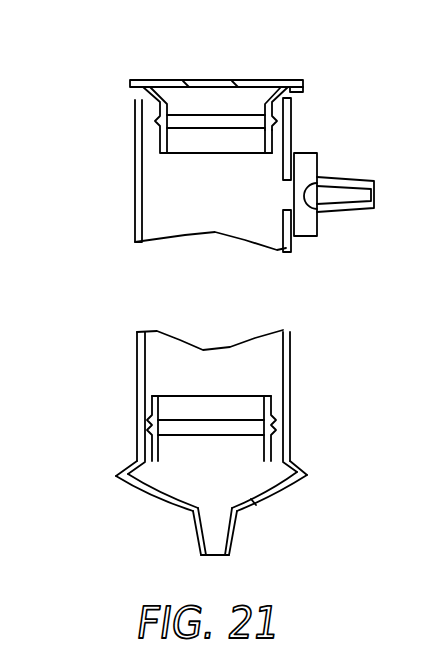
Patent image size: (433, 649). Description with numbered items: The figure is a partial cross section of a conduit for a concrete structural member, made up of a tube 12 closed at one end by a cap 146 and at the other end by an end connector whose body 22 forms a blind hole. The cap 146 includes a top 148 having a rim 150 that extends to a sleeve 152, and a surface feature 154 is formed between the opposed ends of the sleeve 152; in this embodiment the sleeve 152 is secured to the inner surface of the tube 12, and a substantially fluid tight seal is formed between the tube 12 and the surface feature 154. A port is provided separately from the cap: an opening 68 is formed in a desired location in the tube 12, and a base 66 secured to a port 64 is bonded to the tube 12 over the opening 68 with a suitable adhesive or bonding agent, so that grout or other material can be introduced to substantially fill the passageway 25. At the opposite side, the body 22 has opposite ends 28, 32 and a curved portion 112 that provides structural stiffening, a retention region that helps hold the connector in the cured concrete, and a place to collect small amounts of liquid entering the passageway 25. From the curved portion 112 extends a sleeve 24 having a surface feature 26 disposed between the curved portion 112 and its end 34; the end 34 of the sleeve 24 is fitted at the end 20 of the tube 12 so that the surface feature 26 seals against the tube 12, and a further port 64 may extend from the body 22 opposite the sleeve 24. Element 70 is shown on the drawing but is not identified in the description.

The tube 12 is at (216, 279).
The end of tube 20 is at (331, 449).
The body 22 is at (132, 507).
The sleeve 24 is at (161, 423).
The passageway 25 is at (178, 255).
The surface feature 26 is at (321, 424).
The end of body 28 is at (174, 550).
The end of body 32 is at (106, 457).
The end of sleeve 34 is at (211, 373).
The port 64 is at (305, 366).
The base 66 is at (326, 216).
The opening 68 is at (211, 150).
The right funnel wall 70 is at (300, 491).
The curved portion 112 is at (98, 493).
The cap 146 is at (216, 58).
The top 148 is at (278, 50).
The rim 150 is at (339, 73).
The sleeve 152 is at (326, 136).
The surface feature 154 is at (326, 108).